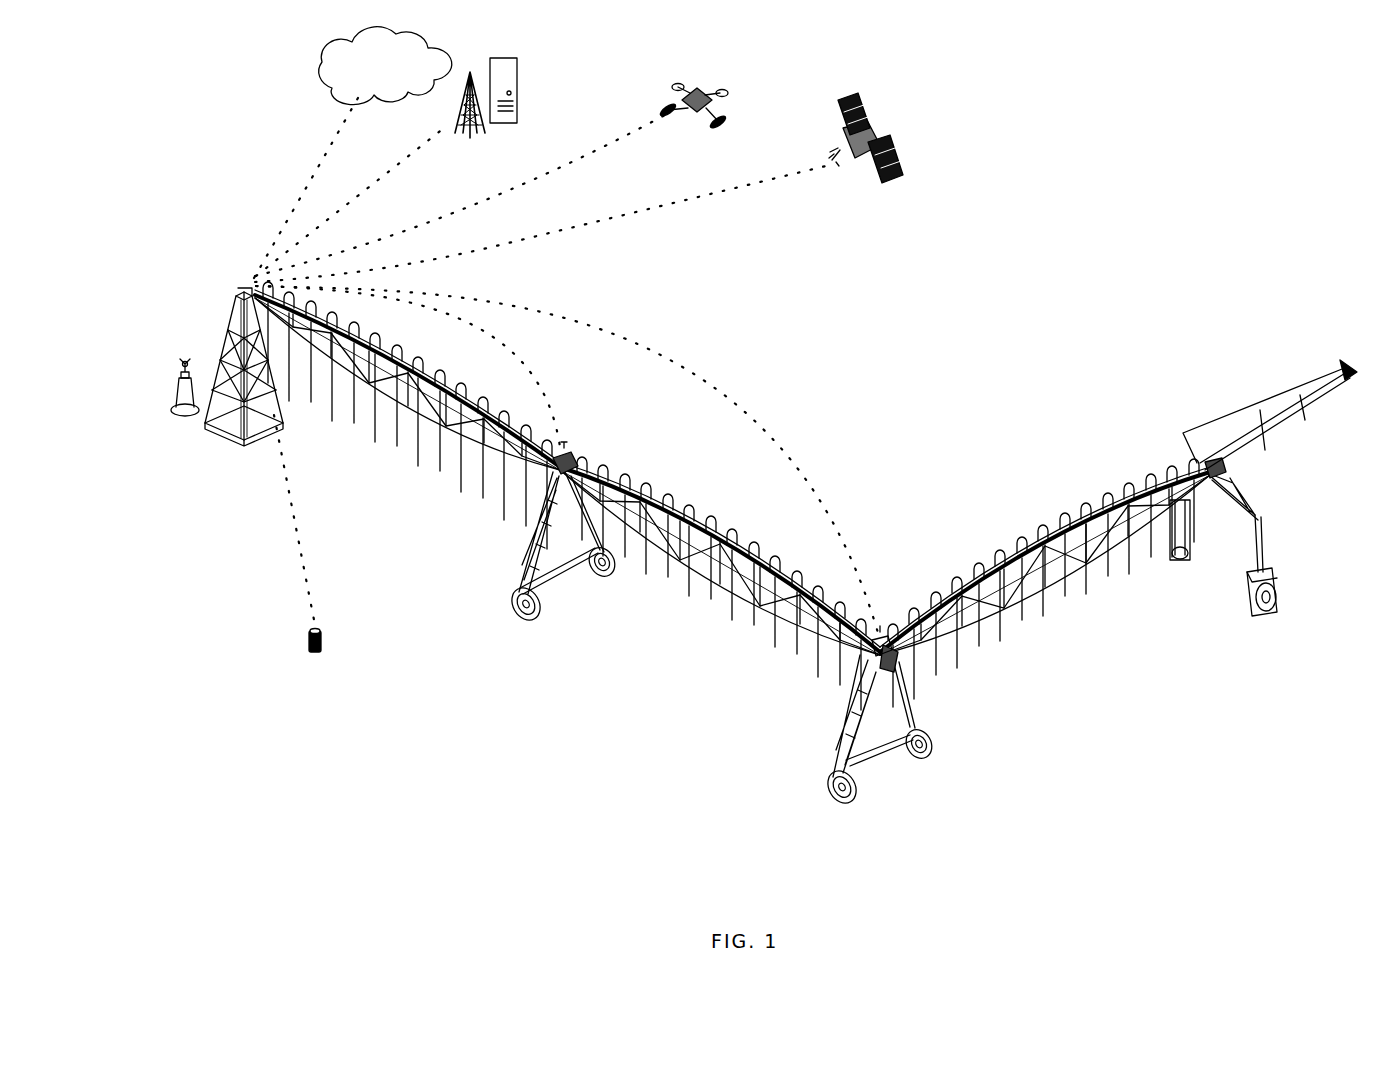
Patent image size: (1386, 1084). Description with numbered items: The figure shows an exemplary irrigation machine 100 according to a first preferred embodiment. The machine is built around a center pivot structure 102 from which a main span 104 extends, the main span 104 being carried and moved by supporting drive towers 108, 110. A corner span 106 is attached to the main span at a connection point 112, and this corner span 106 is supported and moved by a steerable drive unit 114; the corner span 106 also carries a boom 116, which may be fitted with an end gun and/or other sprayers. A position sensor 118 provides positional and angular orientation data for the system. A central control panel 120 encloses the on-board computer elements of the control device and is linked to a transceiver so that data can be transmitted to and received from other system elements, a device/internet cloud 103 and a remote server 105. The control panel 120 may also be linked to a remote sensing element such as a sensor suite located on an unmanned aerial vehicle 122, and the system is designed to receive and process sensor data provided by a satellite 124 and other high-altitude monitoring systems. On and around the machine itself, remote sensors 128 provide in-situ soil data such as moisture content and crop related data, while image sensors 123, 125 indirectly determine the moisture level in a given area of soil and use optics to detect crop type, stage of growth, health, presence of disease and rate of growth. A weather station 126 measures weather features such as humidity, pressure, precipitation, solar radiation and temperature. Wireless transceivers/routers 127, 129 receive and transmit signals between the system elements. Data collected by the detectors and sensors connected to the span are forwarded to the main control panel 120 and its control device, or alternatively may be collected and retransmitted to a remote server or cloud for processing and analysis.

The irrigation machine 100 is at (1066, 185).
The center pivot structure 102 is at (232, 305).
The device/internet cloud 103 is at (345, 75).
The main span 104 is at (628, 478).
The remote server 105 is at (512, 60).
The corner span 106 is at (995, 557).
The drive tower 108 is at (547, 500).
The drive tower 110 is at (840, 743).
The connection point 112 is at (900, 667).
The steerable drive unit 114 is at (1255, 513).
The boom 116 is at (1260, 403).
The position sensor 118 is at (1213, 462).
The central control panel 120 is at (227, 387).
The unmanned aerial vehicle 122 is at (708, 86).
The image sensor 123 is at (580, 487).
The satellite 124 is at (887, 128).
The image sensor 125 is at (1215, 478).
The weather station 126 is at (177, 400).
The wireless transceiver/router 127 is at (558, 462).
The remote sensor 128 is at (308, 652).
The wireless transceiver/router 129 is at (880, 663).